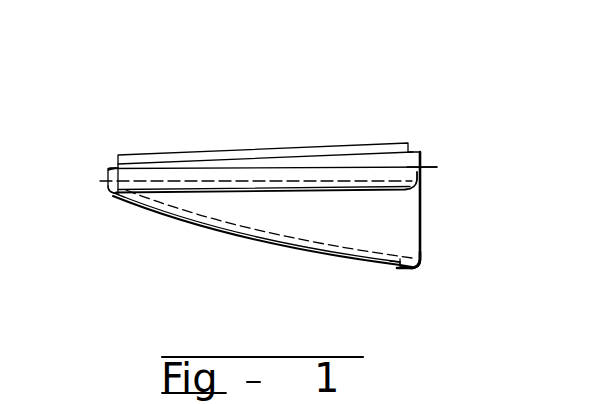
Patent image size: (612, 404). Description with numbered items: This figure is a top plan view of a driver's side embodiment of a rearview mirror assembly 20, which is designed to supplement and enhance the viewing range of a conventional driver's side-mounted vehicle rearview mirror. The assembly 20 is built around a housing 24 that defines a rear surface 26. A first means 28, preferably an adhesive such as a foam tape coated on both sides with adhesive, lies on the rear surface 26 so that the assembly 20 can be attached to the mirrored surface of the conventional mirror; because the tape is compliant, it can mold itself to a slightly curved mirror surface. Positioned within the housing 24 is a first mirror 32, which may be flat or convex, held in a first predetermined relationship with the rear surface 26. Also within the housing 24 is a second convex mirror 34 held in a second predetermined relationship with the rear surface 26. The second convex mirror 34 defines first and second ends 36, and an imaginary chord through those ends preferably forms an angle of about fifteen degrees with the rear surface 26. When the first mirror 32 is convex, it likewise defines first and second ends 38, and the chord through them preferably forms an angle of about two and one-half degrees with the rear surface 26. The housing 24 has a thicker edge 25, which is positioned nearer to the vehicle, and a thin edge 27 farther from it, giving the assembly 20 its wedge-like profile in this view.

The rearview mirror assembly 20 is at (393, 90).
The housing 24 is at (400, 212).
The thicker edge 25 is at (421, 240).
The rear surface 26 is at (247, 164).
The thin edge 27 is at (105, 177).
The first means 28 is at (382, 144).
The first mirror 32 is at (245, 192).
The second convex mirror 34 is at (320, 250).
The first end 36 is at (120, 198).
The first end 38 is at (110, 167).